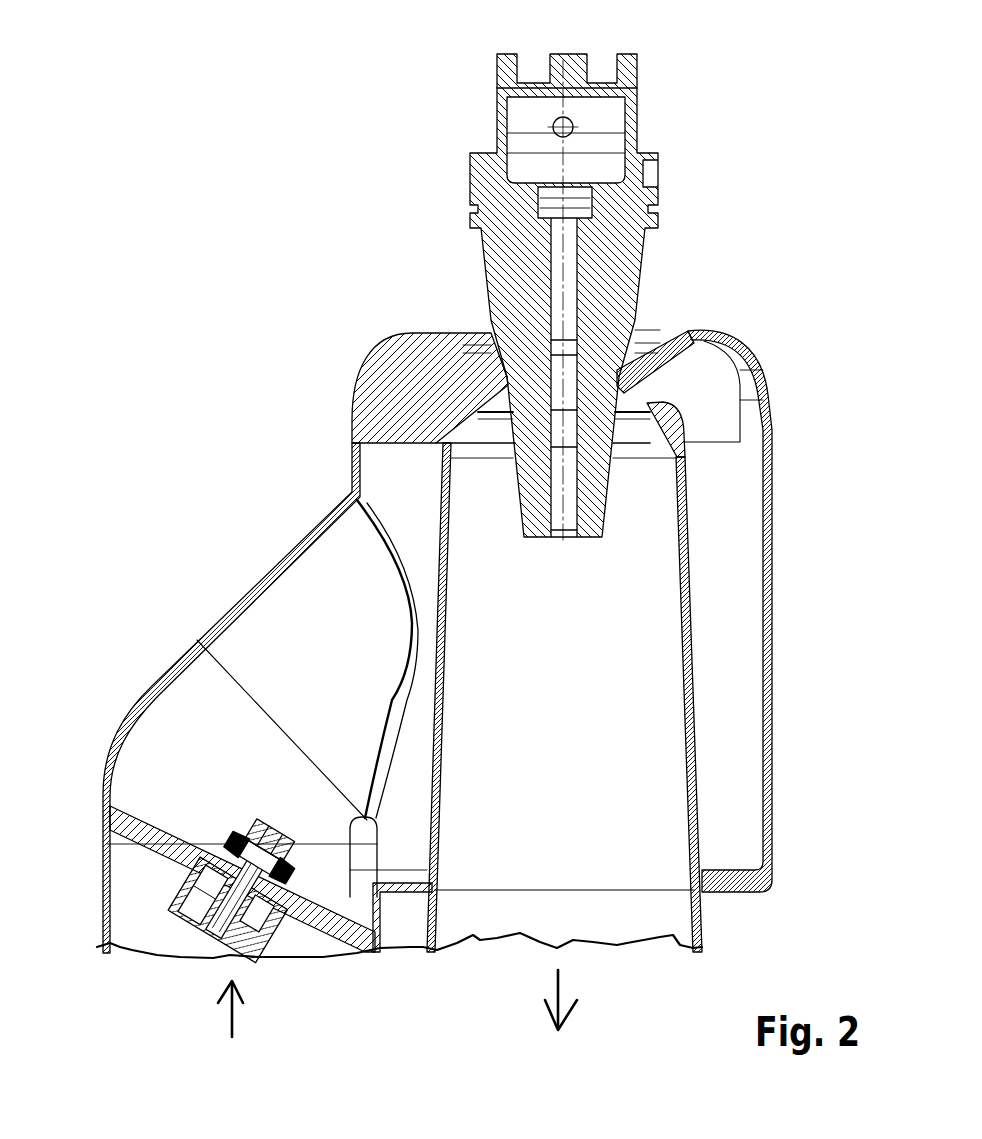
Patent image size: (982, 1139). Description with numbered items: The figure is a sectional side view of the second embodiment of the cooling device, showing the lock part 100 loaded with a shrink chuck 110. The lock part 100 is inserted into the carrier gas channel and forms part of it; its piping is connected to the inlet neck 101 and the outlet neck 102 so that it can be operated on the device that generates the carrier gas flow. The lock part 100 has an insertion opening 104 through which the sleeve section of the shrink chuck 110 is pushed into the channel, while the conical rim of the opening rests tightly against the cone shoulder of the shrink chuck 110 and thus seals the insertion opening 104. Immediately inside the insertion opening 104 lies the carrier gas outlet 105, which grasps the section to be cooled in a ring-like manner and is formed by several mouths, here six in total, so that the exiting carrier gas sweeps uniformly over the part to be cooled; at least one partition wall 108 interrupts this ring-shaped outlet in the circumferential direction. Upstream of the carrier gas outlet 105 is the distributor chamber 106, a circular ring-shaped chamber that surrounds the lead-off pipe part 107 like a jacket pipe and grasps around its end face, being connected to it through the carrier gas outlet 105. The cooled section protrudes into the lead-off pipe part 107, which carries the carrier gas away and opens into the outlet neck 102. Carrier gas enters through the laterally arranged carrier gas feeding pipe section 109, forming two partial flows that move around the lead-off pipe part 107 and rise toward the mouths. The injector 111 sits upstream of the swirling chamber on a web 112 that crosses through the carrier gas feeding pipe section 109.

The lock part 100 is at (456, 563).
The inlet neck 101 is at (261, 1009).
The outlet neck 102 is at (597, 1002).
The insertion opening 104 is at (495, 378).
The carrier gas outlet 105 is at (622, 396).
The distributor chamber 106 is at (377, 472).
The lead-off pipe part 107 is at (647, 753).
The partition wall 108 is at (385, 402).
The carrier gas feeding pipe section 109 is at (290, 693).
The shrink chuck 110 is at (615, 272).
The injector 111 is at (244, 838).
The web 112 is at (155, 830).